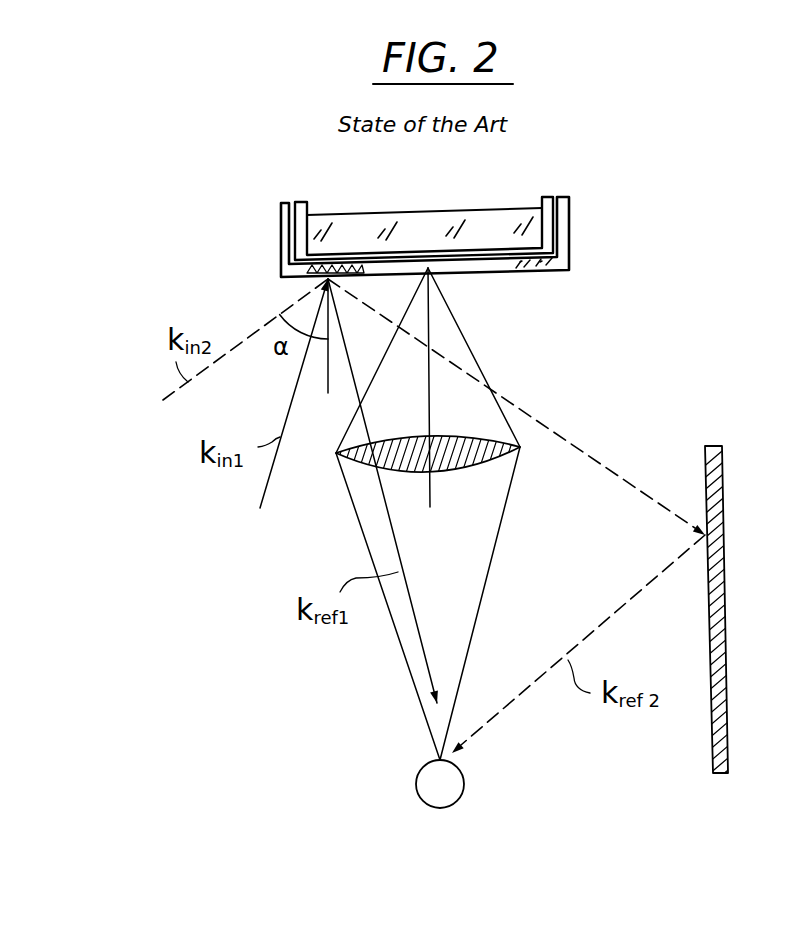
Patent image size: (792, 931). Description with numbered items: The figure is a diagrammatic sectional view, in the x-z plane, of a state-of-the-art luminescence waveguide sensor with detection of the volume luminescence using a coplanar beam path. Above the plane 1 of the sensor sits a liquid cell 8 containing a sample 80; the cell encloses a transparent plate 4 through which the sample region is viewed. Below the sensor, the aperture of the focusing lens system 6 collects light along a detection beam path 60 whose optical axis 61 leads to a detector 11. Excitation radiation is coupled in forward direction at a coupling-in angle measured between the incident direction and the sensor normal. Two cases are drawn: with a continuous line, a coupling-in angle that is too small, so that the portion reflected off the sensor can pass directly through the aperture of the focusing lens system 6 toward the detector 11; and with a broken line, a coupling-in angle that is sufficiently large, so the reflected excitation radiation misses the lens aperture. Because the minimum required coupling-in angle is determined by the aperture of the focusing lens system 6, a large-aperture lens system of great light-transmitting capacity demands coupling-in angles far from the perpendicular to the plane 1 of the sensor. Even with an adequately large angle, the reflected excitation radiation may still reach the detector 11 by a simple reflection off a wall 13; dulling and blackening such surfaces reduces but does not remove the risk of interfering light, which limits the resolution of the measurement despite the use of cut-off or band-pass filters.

The plane of the sensor 1 is at (488, 284).
The glass plate / sample carrier 4 is at (434, 214).
The focusing lens system 6 is at (467, 458).
The liquid cell 8 is at (570, 213).
The detector 11 is at (458, 783).
The wall 13 is at (720, 658).
The detection beam path 60 is at (460, 343).
The optical axis 61 is at (432, 405).
The sample 80 is at (570, 252).